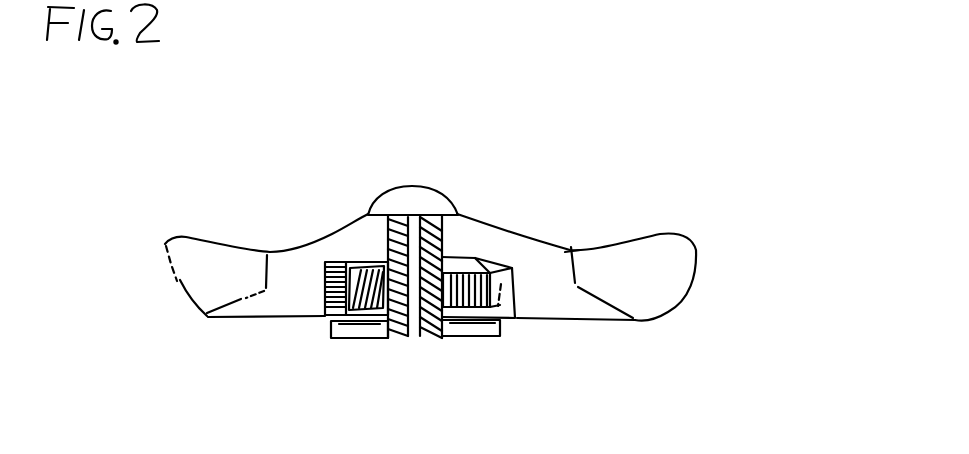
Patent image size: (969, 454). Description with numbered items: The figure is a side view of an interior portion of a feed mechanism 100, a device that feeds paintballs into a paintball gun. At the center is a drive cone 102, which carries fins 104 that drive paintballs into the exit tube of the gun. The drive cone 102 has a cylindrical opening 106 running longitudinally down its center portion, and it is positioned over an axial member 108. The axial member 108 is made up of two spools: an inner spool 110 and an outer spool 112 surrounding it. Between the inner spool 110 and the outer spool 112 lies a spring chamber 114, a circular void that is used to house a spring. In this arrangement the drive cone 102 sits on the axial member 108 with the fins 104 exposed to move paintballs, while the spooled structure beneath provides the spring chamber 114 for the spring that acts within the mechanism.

The feed mechanism 100 is at (589, 186).
The drive cone 102 is at (322, 214).
The fins 104 is at (198, 285).
The cylindrical opening 106 is at (410, 351).
The axial member 108 is at (454, 245).
The inner spool 110 is at (427, 334).
The outer spool 112 is at (318, 318).
The spring chamber 114 is at (543, 239).